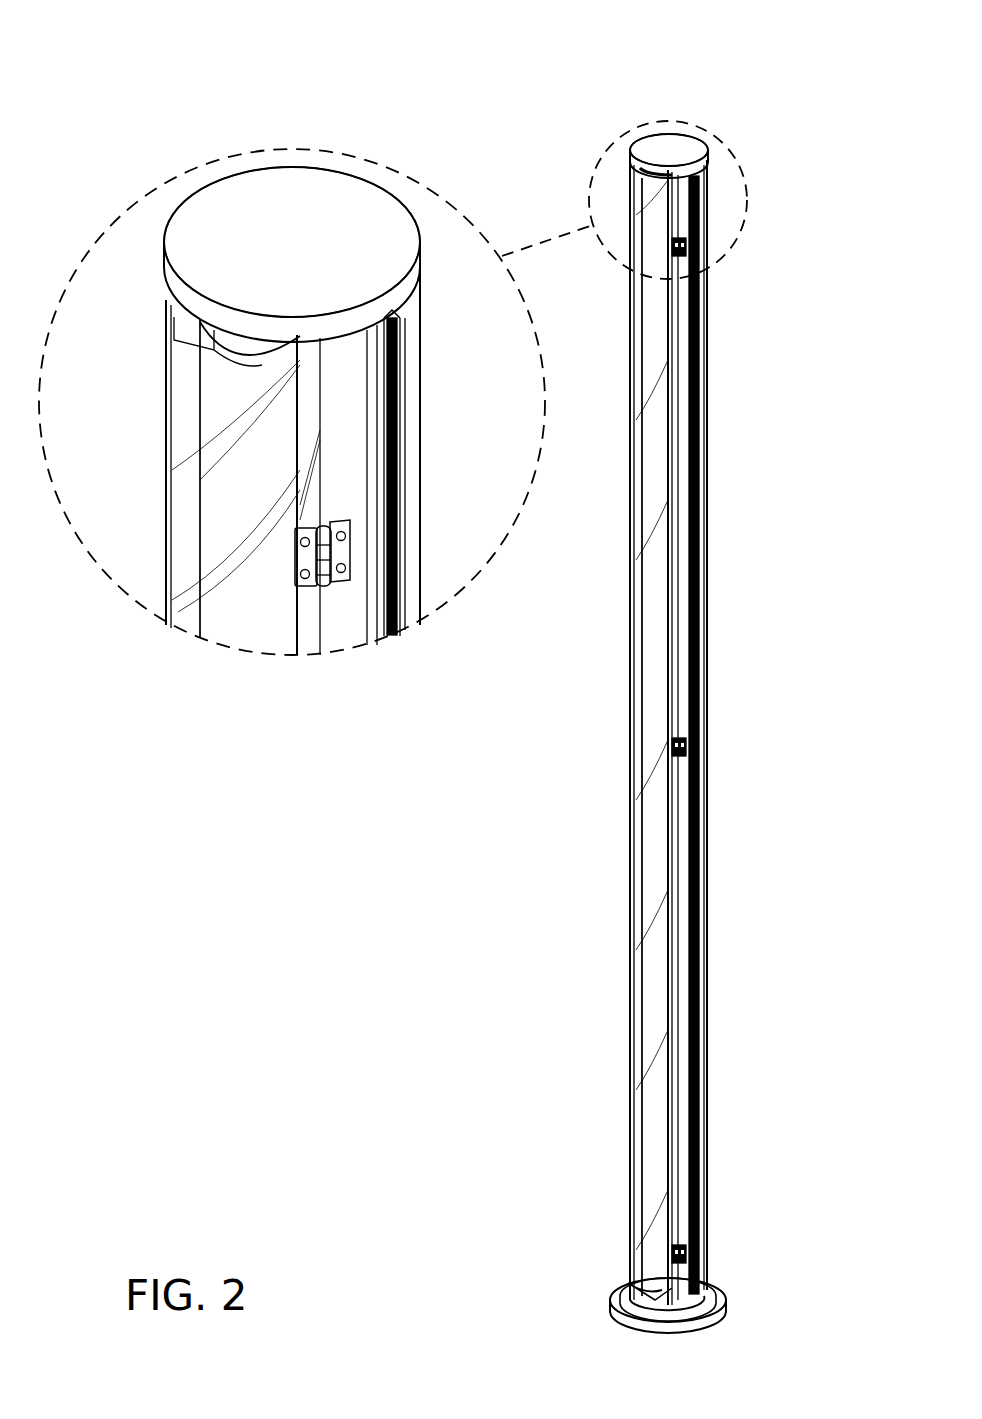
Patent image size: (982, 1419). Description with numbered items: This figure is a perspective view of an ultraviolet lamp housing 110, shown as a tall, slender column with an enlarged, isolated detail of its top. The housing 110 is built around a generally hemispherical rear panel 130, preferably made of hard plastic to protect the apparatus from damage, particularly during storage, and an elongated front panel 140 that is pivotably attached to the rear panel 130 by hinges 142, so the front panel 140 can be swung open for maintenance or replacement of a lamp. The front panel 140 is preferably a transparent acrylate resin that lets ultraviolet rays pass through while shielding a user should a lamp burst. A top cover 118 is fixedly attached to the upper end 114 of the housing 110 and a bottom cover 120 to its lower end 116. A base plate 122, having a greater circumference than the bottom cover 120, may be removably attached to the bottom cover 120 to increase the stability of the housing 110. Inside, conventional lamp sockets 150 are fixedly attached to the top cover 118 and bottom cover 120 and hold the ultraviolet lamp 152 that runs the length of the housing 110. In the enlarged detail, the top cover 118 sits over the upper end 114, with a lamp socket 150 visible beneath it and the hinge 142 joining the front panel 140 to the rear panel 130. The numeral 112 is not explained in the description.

The lamp housing 110 is at (528, 97).
The post 112 is at (398, 368).
The upper end 114 is at (720, 158).
The lower end 116 is at (730, 1253).
The top cover 118 is at (670, 148).
The bottom cover 120 is at (645, 1307).
The base plate 122 is at (720, 1297).
The rear panel 130 is at (410, 470).
The front panel 140 is at (165, 432).
The hinges 142 is at (303, 570).
The lamp sockets 150 is at (232, 340).
The ultraviolet lamp 152 is at (230, 392).